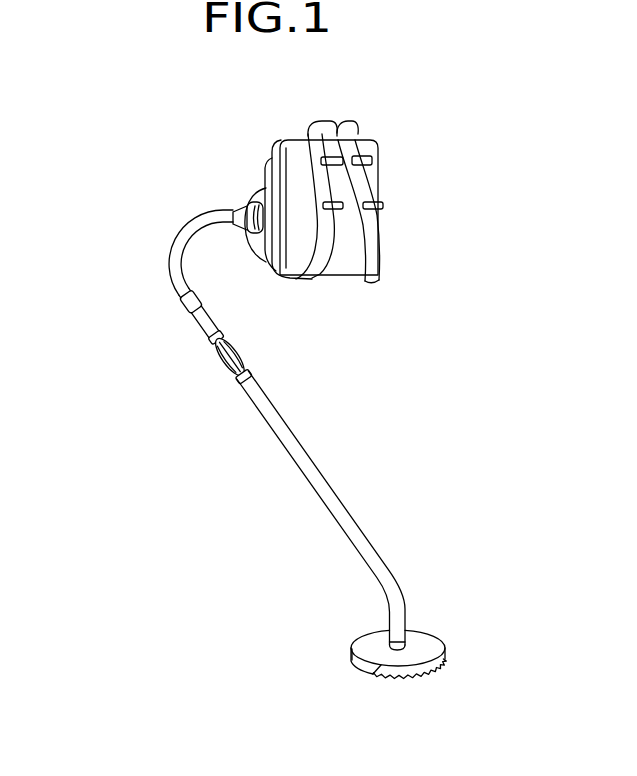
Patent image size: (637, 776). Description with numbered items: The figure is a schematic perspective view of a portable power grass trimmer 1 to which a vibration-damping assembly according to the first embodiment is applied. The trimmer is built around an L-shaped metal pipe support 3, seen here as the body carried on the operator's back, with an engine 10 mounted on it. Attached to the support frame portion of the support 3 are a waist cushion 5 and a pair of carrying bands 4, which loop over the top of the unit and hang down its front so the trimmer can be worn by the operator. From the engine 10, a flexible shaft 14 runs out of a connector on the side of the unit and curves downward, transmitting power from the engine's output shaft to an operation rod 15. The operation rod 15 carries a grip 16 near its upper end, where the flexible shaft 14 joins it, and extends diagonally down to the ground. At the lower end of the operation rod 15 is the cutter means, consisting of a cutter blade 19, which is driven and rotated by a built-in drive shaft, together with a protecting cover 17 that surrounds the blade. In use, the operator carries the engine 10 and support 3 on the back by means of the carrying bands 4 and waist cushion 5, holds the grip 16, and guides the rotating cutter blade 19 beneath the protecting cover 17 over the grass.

The portable power grass trimmer 1 is at (145, 175).
The support 3 is at (265, 265).
The carrying bands 4 is at (333, 272).
The waist cushion 5 is at (284, 270).
The engine 10 is at (254, 191).
The flexible shaft 14 is at (168, 249).
The operation rod 15 is at (318, 470).
The grip 16 is at (217, 364).
The protecting cover 17 is at (352, 659).
The cutter blade 19 is at (447, 657).